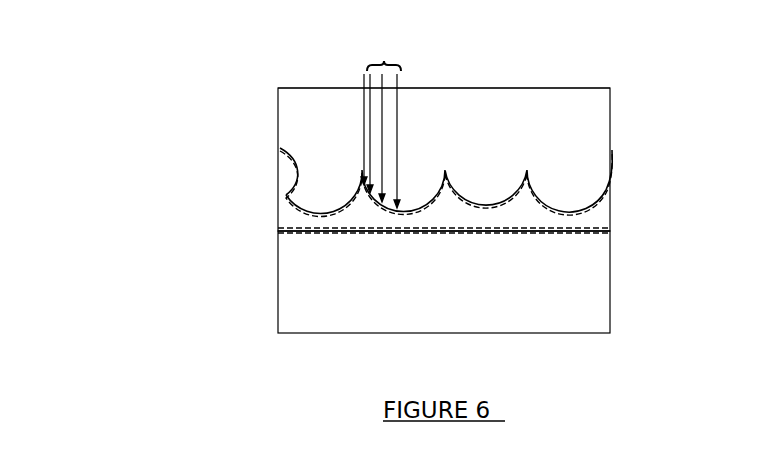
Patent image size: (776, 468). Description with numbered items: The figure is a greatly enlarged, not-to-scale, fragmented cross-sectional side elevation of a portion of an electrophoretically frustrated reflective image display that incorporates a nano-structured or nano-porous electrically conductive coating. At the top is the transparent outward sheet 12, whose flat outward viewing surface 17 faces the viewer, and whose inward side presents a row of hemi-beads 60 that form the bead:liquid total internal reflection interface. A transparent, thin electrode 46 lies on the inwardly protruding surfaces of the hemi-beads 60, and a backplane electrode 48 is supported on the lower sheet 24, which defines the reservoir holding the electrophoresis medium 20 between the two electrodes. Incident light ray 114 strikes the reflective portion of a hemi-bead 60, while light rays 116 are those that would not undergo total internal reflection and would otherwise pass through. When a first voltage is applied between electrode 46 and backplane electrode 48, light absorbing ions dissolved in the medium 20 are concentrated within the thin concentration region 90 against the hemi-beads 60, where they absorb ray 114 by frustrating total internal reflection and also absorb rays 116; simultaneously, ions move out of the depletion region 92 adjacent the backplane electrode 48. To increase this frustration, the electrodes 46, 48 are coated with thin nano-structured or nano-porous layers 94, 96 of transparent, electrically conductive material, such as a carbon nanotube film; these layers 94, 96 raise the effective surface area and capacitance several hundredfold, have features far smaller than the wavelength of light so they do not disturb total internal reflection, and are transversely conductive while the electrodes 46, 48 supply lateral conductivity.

The transparent outward sheet 12 is at (278, 98).
The flat outward viewing surface 17 is at (300, 88).
The light ray 114 is at (364, 78).
The light rays 116 is at (384, 62).
The electrode 46 is at (297, 172).
The hemi-beads 60 is at (332, 198).
The concentration region 90 is at (268, 164).
The nano-structured or nano-porous layer 94 is at (284, 200).
The electrophoresis medium 20 is at (293, 218).
The depletion region 92 is at (265, 228).
The nano-structured or nano-porous layer 96 is at (371, 227).
The backplane electrode 48 is at (452, 232).
The lower sheet 24 is at (610, 270).